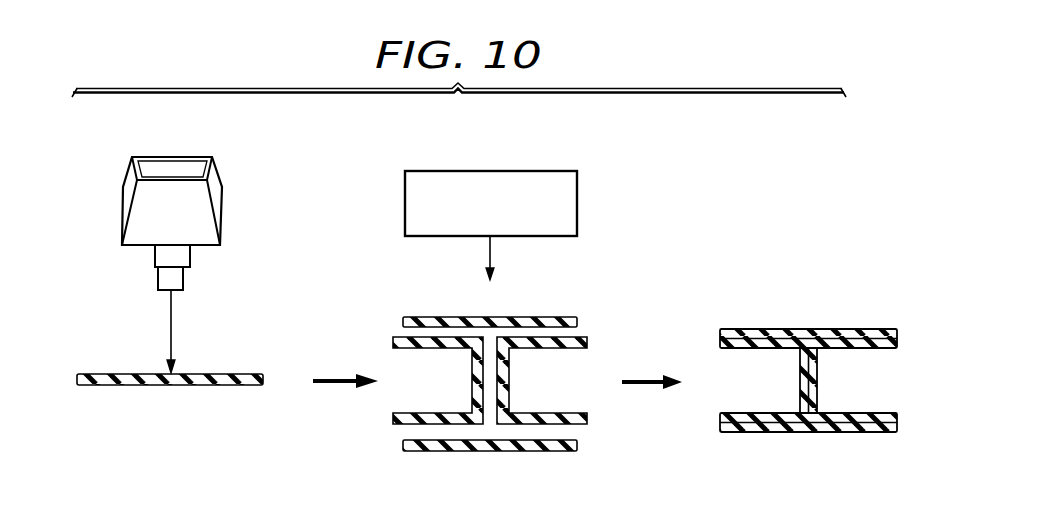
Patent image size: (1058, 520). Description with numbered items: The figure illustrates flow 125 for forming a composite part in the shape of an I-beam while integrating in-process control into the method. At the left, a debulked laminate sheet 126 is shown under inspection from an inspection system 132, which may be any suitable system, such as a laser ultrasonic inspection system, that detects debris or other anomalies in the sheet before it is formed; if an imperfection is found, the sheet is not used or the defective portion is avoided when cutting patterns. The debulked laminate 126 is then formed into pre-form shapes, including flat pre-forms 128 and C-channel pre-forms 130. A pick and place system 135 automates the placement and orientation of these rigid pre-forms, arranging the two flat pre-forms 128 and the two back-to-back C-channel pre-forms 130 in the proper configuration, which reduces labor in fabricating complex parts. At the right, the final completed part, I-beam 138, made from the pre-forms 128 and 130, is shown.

The flow 125 is at (720, 208).
The debulked laminate 126 is at (115, 373).
The flat pre-form 128 is at (577, 322).
The C-channel pre-form 130 is at (427, 348).
The inspection system 132 is at (222, 208).
The pick and place system 135 is at (577, 193).
The I-beam 138 is at (740, 329).